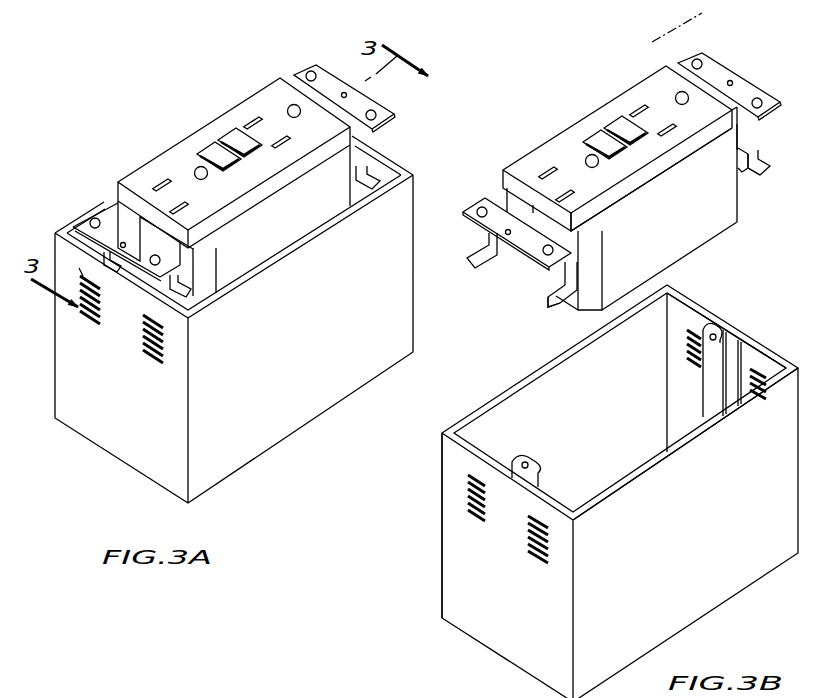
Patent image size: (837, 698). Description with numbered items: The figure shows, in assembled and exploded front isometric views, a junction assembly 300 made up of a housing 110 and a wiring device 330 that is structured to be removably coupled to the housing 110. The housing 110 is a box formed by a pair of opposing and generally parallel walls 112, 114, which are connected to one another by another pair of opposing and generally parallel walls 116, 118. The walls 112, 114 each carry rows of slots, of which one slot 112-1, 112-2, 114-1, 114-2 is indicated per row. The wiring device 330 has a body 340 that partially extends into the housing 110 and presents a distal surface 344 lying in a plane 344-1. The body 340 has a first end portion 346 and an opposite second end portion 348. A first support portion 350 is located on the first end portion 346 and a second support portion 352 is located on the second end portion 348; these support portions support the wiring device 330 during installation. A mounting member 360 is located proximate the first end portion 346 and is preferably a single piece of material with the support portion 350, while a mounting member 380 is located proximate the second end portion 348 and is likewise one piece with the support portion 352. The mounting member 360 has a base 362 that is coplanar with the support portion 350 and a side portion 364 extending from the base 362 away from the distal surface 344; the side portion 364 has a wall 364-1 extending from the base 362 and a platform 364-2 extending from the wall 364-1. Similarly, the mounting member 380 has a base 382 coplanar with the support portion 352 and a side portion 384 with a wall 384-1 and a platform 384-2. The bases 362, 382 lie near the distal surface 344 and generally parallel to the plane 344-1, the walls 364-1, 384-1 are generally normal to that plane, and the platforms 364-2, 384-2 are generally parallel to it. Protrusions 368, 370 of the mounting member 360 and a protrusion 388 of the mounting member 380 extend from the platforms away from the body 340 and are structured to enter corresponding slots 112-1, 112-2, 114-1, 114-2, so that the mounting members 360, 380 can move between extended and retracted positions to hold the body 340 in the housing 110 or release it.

In FIG. 3A, the junction assembly 300 is at (83, 179).
In FIG. 3B, the junction assembly 300 is at (800, 608).
In FIG. 3A, the housing 110 is at (113, 428).
In FIG. 3B, the housing 110 is at (590, 474).
In FIG. 3B, the wall 112 is at (483, 615).
In FIG. 3B, the slot 112-1 is at (536, 520).
In FIG. 3B, the slot 112-2 is at (464, 480).
In FIG. 3B, the wall 114 is at (740, 337).
In FIG. 3B, the slot 114-1 is at (750, 370).
In FIG. 3B, the slot 114-2 is at (697, 322).
In FIG. 3B, the wall 116 is at (697, 593).
In FIG. 3B, the wall 118 is at (659, 302).
In FIG. 3A, the wiring device 330 is at (212, 114).
In FIG. 3B, the wiring device 330 is at (619, 189).
In FIG. 3B, the body 340 is at (619, 189).
In FIG. 3B, the distal surface 344 is at (562, 143).
In FIG. 3B, the plane 344-1 is at (662, 50).
In FIG. 3B, the first end portion 346 is at (585, 204).
In FIG. 3B, the second end portion 348 is at (714, 106).
In FIG. 3B, the first support portion 350 is at (495, 207).
In FIG. 3B, the second support portion 352 is at (712, 68).
In FIG. 3B, the mounting member 360 is at (453, 200).
In FIG. 3B, the base 362 is at (523, 210).
In FIG. 3B, the side portion 364 is at (646, 232).
In FIG. 3B, the wall 364-1 is at (580, 242).
In FIG. 3B, the platform 364-2 is at (560, 267).
In FIG. 3B, the protrusion 368 is at (533, 316).
In FIG. 3B, the protrusion 370 is at (472, 270).
In FIG. 3B, the mounting member 380 is at (747, 66).
In FIG. 3B, the base 382 is at (722, 97).
In FIG. 3B, the side portion 384 is at (774, 187).
In FIG. 3B, the wall 384-1 is at (740, 122).
In FIG. 3B, the platform 384-2 is at (755, 170).
In FIG. 3B, the protrusion 388 is at (764, 176).